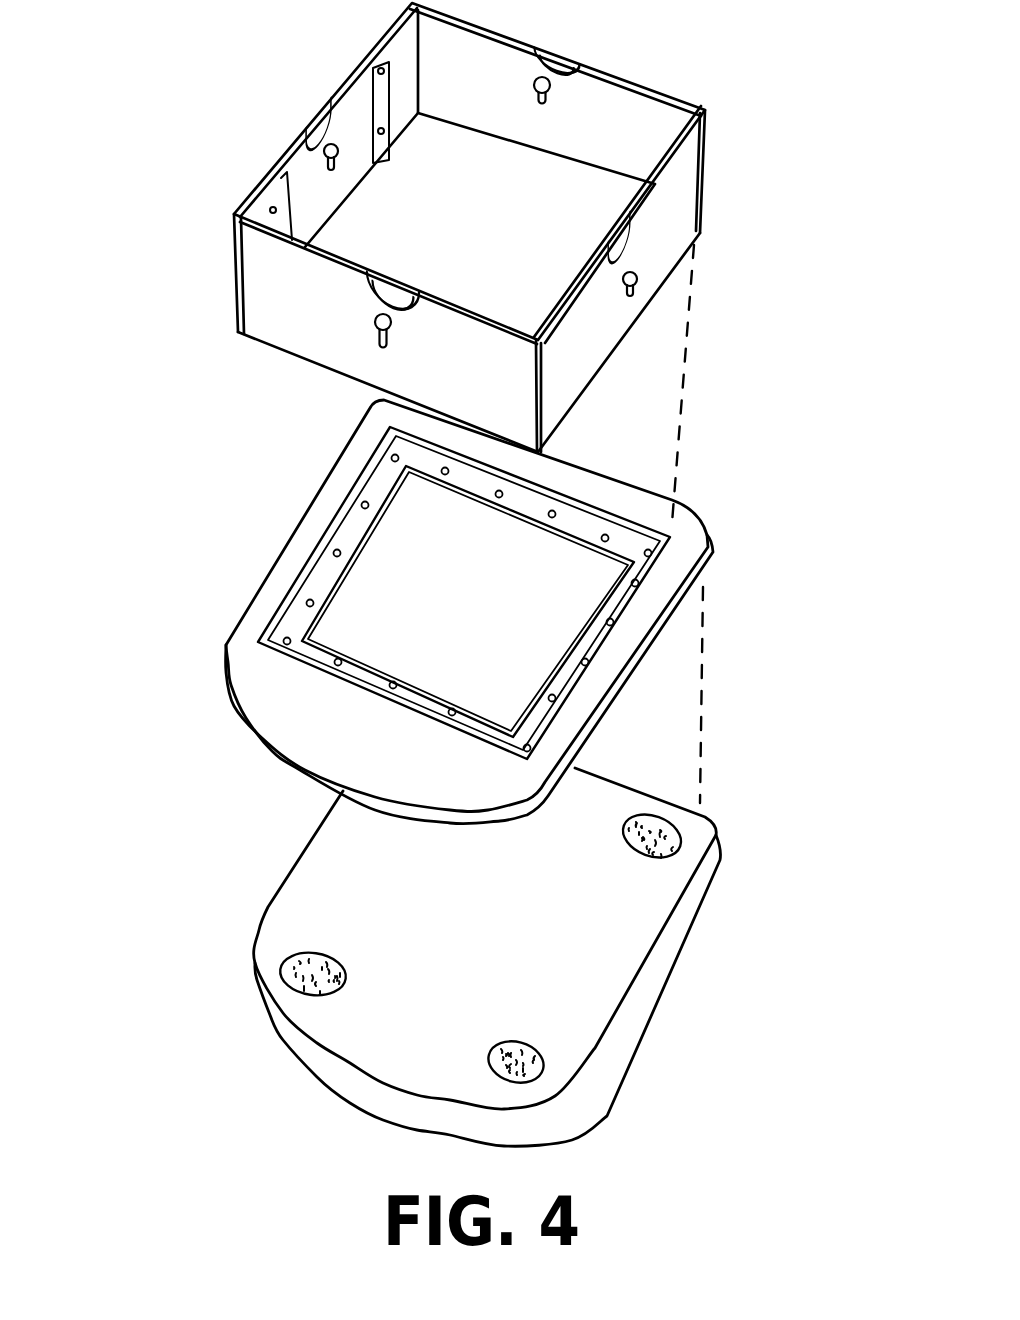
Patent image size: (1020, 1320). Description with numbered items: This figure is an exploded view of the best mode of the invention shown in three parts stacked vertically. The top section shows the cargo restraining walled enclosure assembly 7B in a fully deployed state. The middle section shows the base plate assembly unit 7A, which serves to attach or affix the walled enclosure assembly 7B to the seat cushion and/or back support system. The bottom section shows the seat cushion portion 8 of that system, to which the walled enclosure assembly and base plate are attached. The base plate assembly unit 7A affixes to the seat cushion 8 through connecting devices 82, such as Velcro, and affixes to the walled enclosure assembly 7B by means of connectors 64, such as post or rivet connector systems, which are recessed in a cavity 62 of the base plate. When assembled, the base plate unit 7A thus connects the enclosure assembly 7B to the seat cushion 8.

The walled enclosure assembly 7B is at (207, 373).
The base plate assembly unit 7A is at (295, 702).
The cavity 62 is at (325, 568).
The connectors 64 is at (366, 505).
The seat cushion portion 8 is at (340, 888).
The connecting devices 82 is at (274, 974).